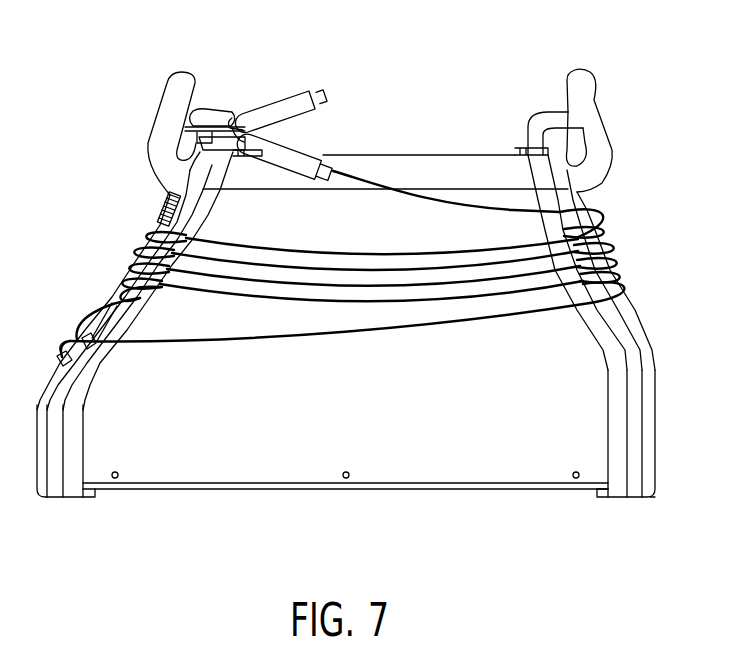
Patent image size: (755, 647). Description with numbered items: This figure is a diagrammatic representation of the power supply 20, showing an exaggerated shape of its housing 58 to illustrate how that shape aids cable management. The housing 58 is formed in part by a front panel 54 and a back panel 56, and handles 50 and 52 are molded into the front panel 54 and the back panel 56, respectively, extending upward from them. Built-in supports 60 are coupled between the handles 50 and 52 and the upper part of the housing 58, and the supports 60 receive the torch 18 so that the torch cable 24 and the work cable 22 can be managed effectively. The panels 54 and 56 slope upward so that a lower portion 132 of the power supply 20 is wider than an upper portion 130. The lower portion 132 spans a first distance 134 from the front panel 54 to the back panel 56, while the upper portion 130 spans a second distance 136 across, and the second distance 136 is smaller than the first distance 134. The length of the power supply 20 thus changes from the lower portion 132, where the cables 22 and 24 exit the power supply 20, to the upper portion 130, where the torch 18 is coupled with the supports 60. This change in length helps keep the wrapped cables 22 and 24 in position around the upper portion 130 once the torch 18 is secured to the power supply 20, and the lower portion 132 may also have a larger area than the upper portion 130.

The torch 18 is at (275, 100).
The power supply 20 is at (50, 150).
The work cable 22 is at (310, 338).
The torch cable 24 is at (423, 303).
The handle 50 is at (150, 152).
The handle 52 is at (604, 160).
The front panel 54 is at (110, 313).
The back panel 56 is at (648, 330).
The housing 58 is at (588, 415).
The support 60 is at (205, 113).
The upper portion 130 is at (626, 257).
The lower portion 132 is at (665, 457).
The first distance 134 is at (655, 552).
The second distance 136 is at (610, 74).